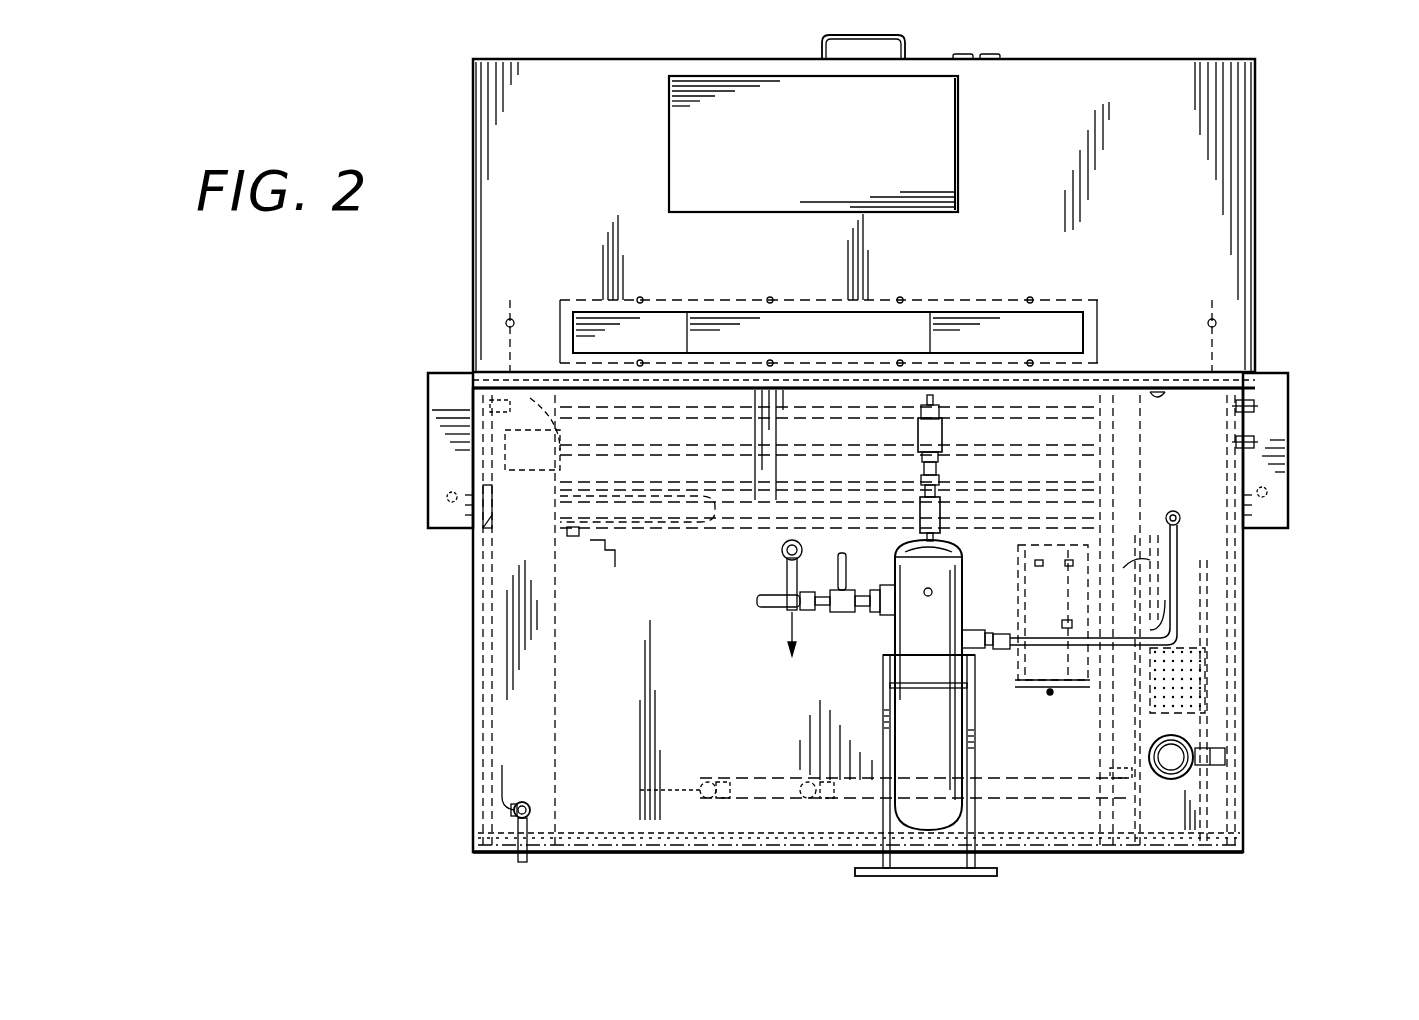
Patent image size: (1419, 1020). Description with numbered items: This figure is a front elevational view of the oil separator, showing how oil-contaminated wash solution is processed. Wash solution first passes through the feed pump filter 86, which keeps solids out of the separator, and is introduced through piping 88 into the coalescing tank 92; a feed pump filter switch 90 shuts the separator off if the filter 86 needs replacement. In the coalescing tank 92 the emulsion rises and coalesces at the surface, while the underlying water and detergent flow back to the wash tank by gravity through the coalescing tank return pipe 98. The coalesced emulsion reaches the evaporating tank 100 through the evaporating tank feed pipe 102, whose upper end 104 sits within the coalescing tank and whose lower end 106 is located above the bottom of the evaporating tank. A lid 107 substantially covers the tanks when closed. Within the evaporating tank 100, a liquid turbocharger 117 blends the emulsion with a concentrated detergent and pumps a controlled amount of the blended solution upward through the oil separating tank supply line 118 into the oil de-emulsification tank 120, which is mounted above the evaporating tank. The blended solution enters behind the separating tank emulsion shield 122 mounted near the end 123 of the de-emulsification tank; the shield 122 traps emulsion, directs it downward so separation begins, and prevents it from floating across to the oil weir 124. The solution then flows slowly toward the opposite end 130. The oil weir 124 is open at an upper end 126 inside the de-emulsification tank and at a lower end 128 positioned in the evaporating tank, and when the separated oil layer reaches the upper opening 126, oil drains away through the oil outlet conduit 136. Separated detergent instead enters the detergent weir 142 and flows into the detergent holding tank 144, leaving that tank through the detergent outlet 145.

The feed pump filter 86 is at (907, 628).
The piping 88 is at (1173, 628).
The feed pump filter switch 90 is at (942, 433).
The coalescing tank 92 is at (1187, 608).
The coalescing tank return pipe 98 is at (1197, 748).
The evaporating tank 100 is at (613, 790).
The evaporating tank feed pipe 102 is at (1015, 855).
The upper end 104 is at (1123, 568).
The lower end 106 is at (717, 790).
The lid 107 is at (1252, 185).
The liquid turbocharger 117 is at (1040, 686).
The oil separating tank supply line 118 is at (1255, 407).
The oil de-emulsification tank 120 is at (1153, 393).
The separating tank emulsion shield 122 is at (1248, 441).
The end 123 is at (1287, 495).
The oil weir 124 is at (600, 478).
The upper end 126 is at (600, 445).
The lower end 128 is at (598, 552).
The end 130 is at (428, 481).
The oil outlet conduit 136 is at (778, 543).
The detergent weir 142 is at (466, 531).
The detergent holding tank 144 is at (495, 663).
The detergent outlet 145 is at (532, 808).